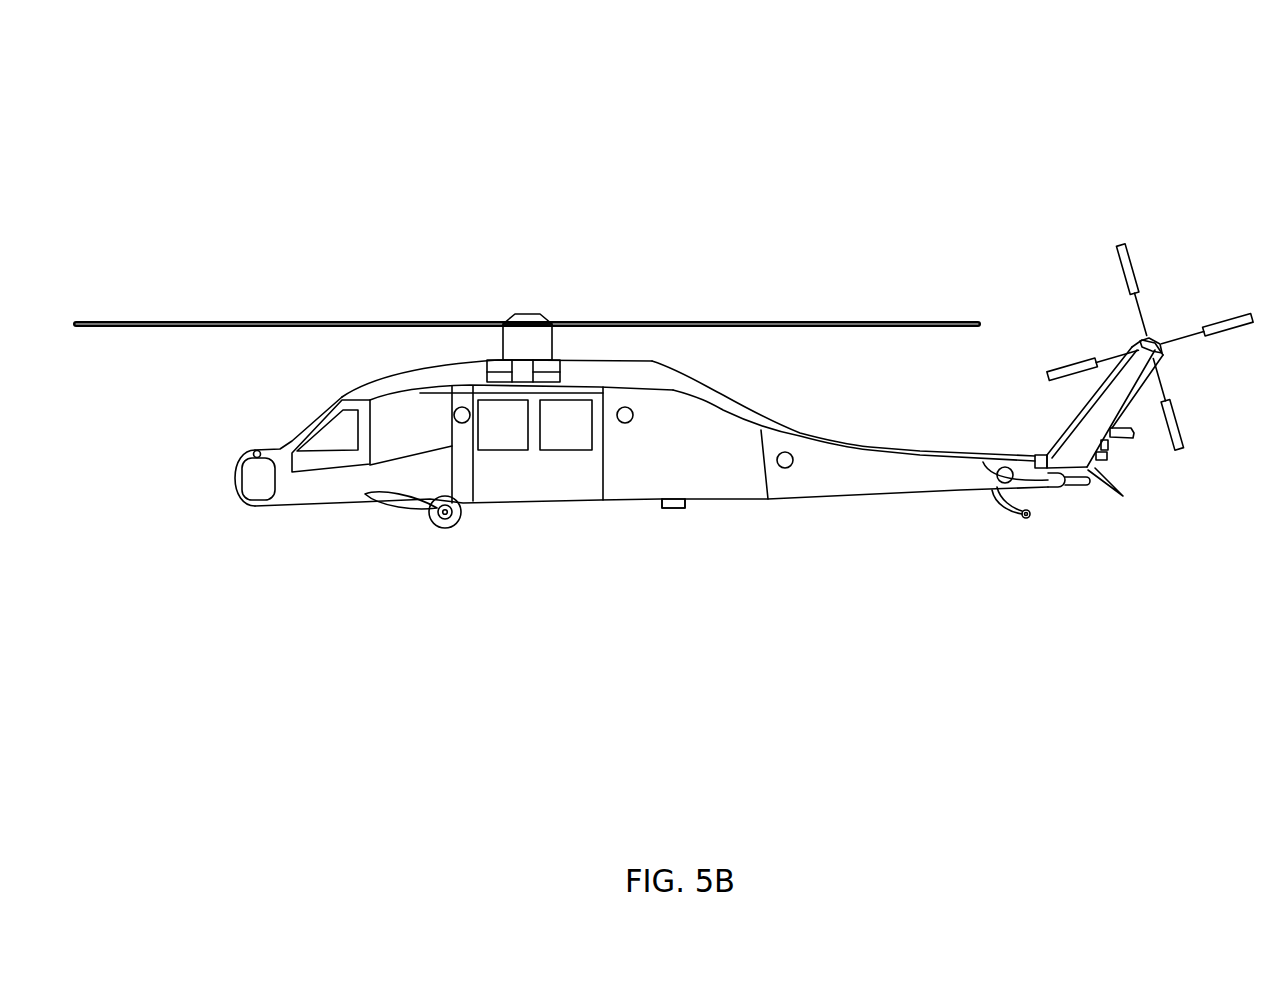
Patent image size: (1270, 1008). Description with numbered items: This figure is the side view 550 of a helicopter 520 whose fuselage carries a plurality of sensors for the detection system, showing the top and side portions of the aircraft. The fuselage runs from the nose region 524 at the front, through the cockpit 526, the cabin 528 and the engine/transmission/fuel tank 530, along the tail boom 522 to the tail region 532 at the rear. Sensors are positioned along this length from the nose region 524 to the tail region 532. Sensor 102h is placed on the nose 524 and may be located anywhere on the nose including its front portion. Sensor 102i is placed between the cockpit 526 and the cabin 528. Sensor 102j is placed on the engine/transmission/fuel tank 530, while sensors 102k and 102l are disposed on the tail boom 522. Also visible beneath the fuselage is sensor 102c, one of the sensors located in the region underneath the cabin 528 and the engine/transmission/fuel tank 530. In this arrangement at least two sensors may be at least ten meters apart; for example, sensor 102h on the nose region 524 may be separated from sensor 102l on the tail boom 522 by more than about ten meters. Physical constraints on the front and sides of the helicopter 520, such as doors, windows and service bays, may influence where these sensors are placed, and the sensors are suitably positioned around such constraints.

The side view 550 is at (1156, 99).
The helicopter 520 is at (323, 506).
The tail boom 522 is at (853, 468).
The nose region 524 is at (236, 488).
The cockpit 526 is at (324, 412).
The cabin 528 is at (560, 503).
The engine/transmission/fuel tank 530 is at (730, 427).
The tail region 532 is at (1083, 502).
The sensor 102h is at (253, 452).
The sensor 102i is at (462, 423).
The sensor 102j is at (625, 423).
The sensor 102c is at (678, 510).
The sensor 102k is at (786, 468).
The sensor 102l is at (1006, 483).